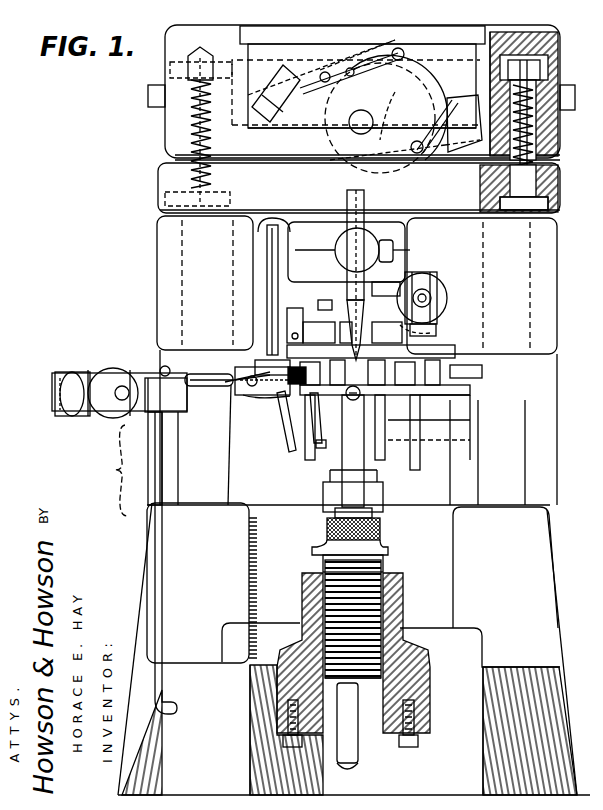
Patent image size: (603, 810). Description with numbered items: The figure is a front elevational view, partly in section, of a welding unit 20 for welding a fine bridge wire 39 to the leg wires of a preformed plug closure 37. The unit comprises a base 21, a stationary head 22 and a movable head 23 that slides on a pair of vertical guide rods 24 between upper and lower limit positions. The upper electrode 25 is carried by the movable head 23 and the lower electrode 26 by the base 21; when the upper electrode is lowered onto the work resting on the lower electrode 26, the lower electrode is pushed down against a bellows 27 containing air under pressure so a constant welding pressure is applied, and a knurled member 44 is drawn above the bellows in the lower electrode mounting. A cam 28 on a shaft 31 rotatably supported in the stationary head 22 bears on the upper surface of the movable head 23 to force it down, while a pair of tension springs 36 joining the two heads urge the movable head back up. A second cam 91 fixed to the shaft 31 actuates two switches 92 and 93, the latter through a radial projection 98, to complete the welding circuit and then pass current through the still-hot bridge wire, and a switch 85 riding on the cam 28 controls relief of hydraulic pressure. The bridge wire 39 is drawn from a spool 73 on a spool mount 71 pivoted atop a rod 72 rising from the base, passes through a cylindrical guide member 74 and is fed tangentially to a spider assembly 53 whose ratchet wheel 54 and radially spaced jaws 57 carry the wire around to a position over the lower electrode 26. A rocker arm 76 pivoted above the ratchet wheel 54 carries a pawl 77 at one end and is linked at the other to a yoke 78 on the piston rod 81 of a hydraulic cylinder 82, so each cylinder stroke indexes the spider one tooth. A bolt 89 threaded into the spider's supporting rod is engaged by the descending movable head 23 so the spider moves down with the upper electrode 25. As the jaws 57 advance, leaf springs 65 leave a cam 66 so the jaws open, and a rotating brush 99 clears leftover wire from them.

The welding unit 20 is at (109, 470).
The base 21 is at (498, 672).
The stationary head 22 is at (170, 118).
The movable head 23 is at (165, 200).
The vertical guide rods 24 is at (218, 488).
The upper electrode 25 is at (366, 210).
The lower electrode 26 is at (350, 468).
The bellows 27 is at (320, 598).
The cam 28 is at (445, 100).
The shaft 31 is at (365, 118).
The tension springs 36 is at (190, 135).
The plug closure 37 is at (358, 398).
The bridge wire 39 is at (140, 372).
The knurled nut 44 is at (377, 508).
The spider assembly 53 is at (418, 352).
The ratchet wheel 54 is at (336, 333).
The jaws 57 is at (255, 393).
The leaf springs 65 is at (313, 432).
The cam 66 is at (317, 440).
The spool mount 71 is at (52, 380).
The rod 72 is at (160, 568).
The spool 73 is at (78, 372).
The cylindrical guide member 74 is at (200, 384).
The rocker arm 76 is at (292, 309).
The pawl 77 is at (290, 335).
The yoke 78 is at (432, 280).
The piston rod 81 is at (432, 299).
The hydraulic cylinder 82 is at (450, 287).
The switch 85 is at (300, 82).
The bolt 89 is at (352, 296).
The second cam 91 is at (395, 92).
The switch 92 is at (276, 90).
The switch 93 is at (458, 118).
The radial projection 98 is at (352, 62).
The brush 99 is at (287, 400).